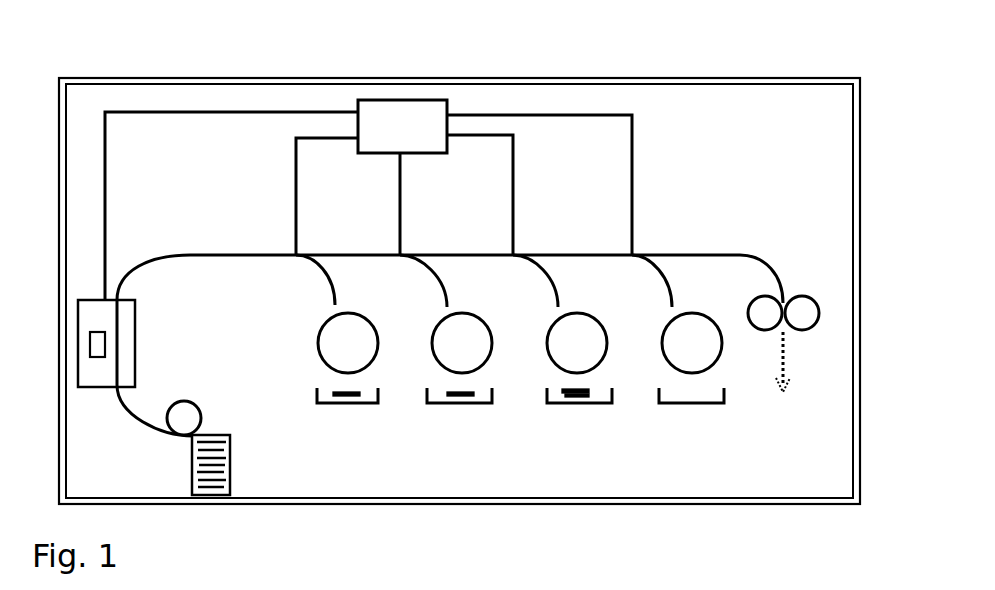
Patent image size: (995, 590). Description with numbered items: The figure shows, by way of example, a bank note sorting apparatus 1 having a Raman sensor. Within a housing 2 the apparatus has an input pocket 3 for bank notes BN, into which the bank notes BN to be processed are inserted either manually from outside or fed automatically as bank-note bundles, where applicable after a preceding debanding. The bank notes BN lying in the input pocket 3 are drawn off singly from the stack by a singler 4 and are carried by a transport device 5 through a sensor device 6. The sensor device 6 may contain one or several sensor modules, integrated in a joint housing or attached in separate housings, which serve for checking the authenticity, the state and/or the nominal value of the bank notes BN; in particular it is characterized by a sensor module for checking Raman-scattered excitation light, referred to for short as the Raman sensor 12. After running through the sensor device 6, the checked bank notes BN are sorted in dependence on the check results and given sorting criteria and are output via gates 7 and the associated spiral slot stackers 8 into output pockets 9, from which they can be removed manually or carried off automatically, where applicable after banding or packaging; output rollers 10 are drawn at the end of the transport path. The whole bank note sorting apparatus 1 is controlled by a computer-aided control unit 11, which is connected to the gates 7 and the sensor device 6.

The bank note sorting apparatus 1 is at (121, 54).
The housing 2 is at (172, 83).
The input pocket 3 is at (226, 488).
The singler 4 is at (182, 410).
The transport device 5 is at (132, 423).
The sensor device 6 is at (128, 342).
The gates 7 is at (298, 254).
The spiral slot stackers 8 is at (364, 327).
The output pockets 9 is at (330, 407).
The output rollers 10 is at (806, 298).
The control unit 11 is at (378, 103).
The Raman sensor 12 is at (95, 335).
The bank notes BN is at (345, 387).